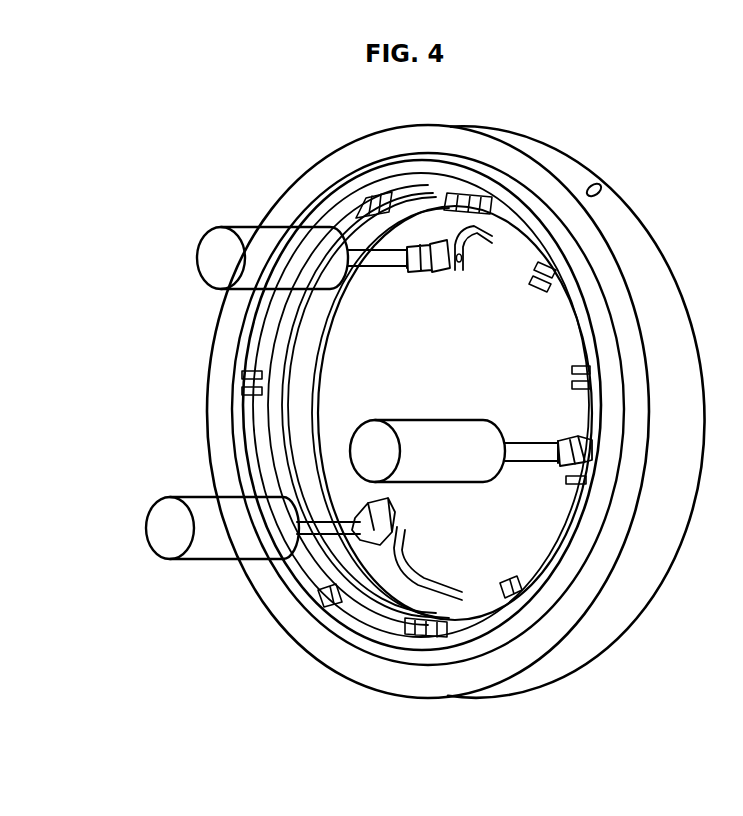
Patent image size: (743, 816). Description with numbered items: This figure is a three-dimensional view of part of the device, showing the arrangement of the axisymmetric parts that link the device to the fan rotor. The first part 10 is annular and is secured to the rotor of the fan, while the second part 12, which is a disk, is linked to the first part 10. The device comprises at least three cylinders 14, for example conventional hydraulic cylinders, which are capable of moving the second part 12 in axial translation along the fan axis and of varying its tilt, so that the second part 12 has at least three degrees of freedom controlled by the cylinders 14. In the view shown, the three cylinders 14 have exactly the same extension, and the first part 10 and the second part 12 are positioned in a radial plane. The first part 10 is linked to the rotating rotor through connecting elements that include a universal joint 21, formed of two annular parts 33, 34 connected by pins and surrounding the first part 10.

The first part 10 is at (607, 362).
The second part 12 is at (298, 462).
The cylinders 14 is at (275, 240).
The universal joint 21 is at (533, 183).
The annular part 33 is at (356, 152).
The annular part 34 is at (331, 205).